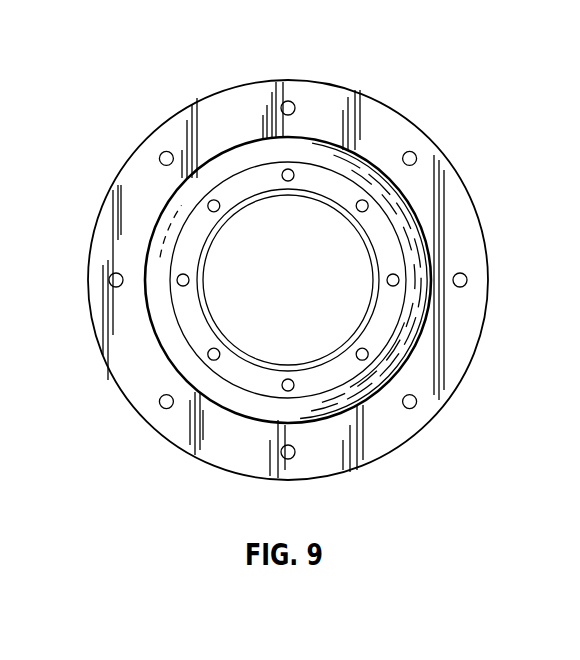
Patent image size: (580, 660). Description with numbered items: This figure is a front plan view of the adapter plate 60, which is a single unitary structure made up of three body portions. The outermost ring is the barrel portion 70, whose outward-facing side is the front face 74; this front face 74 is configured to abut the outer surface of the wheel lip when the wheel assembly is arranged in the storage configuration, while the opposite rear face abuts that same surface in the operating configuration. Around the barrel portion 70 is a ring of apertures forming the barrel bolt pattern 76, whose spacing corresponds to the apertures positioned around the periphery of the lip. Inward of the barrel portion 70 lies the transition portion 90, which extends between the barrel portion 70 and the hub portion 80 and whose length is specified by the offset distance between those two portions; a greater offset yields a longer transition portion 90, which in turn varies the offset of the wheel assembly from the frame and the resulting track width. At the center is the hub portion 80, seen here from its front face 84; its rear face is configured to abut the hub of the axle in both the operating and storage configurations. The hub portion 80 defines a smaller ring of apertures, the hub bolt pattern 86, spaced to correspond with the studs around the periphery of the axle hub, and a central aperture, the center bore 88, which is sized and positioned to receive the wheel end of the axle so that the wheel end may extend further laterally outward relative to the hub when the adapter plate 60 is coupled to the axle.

The adapter plate 60 is at (166, 113).
The barrel portion 70 is at (336, 126).
The front face 74 is at (413, 140).
The barrel bolt pattern 76 is at (465, 266).
The hub portion 80 is at (392, 320).
The front face 84 is at (262, 180).
The hub bolt pattern 86 is at (178, 268).
The center bore 88 is at (232, 312).
The transition portion 90 is at (405, 215).